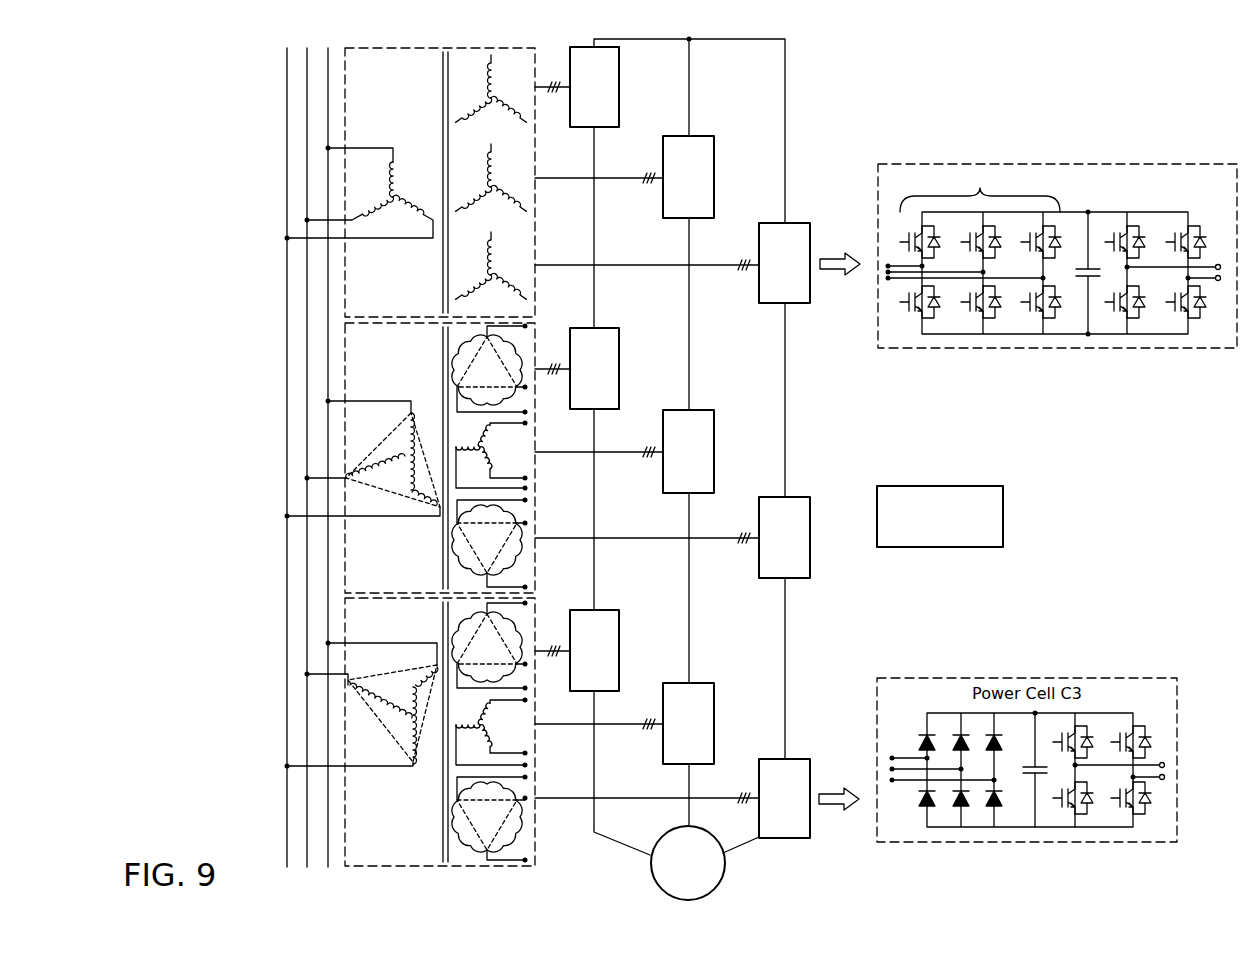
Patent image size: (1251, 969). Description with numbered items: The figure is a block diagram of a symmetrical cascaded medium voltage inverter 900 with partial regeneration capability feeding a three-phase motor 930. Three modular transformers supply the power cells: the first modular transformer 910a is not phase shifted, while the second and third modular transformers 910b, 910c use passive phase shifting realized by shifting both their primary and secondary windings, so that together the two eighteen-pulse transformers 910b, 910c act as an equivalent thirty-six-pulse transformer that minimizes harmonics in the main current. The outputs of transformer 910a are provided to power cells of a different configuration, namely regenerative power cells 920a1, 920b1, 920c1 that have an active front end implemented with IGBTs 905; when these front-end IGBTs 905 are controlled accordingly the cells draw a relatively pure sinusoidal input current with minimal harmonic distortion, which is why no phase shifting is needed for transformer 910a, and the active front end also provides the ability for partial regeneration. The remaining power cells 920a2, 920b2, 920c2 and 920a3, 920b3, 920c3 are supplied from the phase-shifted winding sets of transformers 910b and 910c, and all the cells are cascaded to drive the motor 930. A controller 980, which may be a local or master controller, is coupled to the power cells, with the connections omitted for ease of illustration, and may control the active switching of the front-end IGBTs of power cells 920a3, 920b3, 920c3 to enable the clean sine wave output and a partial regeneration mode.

The inverter 900 is at (1050, 70).
The IGBTs 905 is at (980, 188).
The modular transformer 910a is at (345, 285).
The modular transformer 910b is at (345, 558).
The modular transformer 910c is at (345, 794).
The regenerative power cell 920a1 is at (568, 47).
The regenerative power cell 920b1 is at (710, 136).
The regenerative power cell 920c1 is at (817, 204).
The power cell 920a2 is at (627, 308).
The power cell 920b2 is at (710, 410).
The power cell 920c2 is at (803, 497).
The power cell 920a3 is at (613, 609).
The power cell 920b3 is at (710, 683).
The power cell 920c3 is at (803, 759).
The motor 930 is at (725, 877).
The controller 980 is at (940, 486).